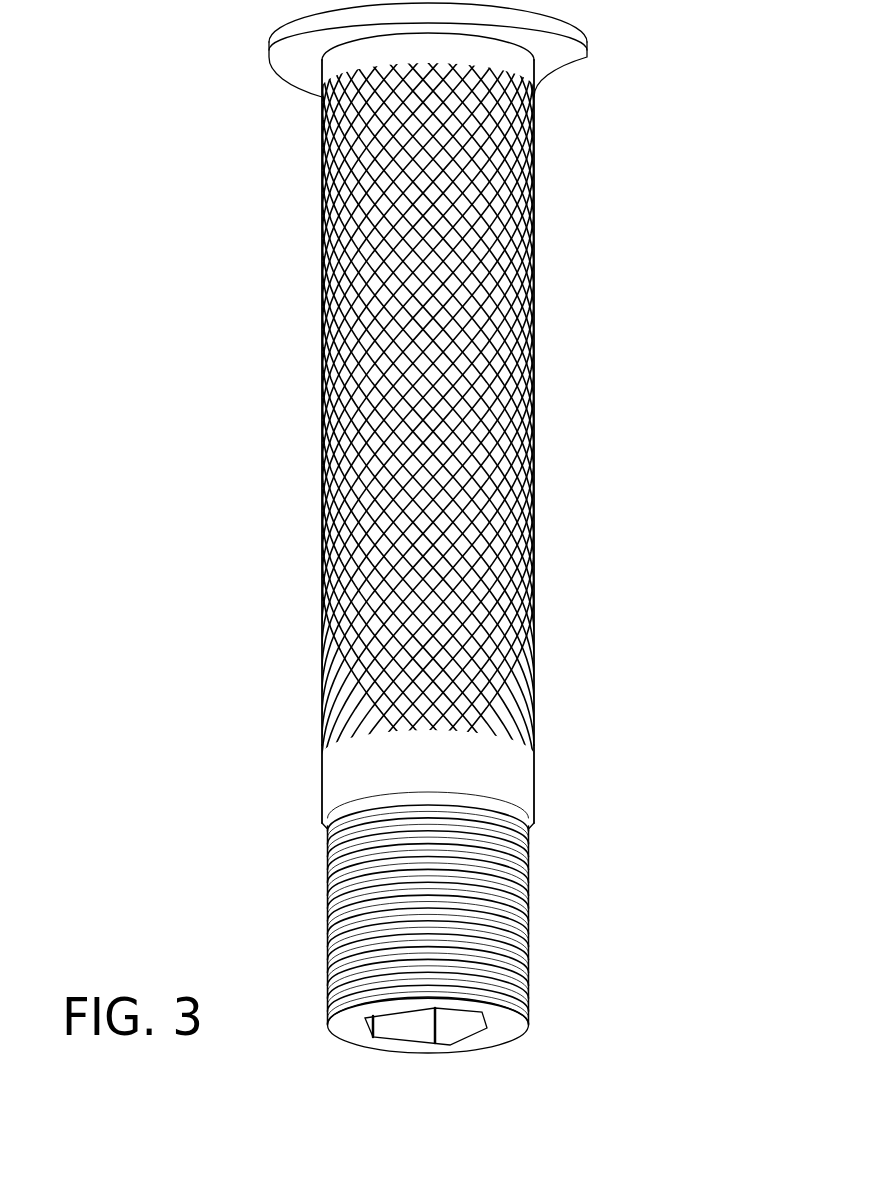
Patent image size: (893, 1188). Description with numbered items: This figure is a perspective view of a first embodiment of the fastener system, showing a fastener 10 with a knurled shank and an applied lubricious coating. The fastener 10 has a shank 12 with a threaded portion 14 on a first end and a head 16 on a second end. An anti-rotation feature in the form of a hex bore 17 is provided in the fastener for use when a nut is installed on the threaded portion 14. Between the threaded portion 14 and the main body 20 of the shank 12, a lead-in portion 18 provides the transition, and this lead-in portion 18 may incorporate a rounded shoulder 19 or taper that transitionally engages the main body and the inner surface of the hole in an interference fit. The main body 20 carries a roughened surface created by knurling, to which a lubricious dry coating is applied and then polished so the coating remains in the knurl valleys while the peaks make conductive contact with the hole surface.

The fastener 10 is at (595, 272).
The shank 12 is at (312, 411).
The threaded portion 14 is at (528, 923).
The head 16 is at (585, 45).
The hex bore 17 is at (422, 1020).
The lead-in portion 18 is at (533, 772).
The rounded shoulder 19 is at (388, 788).
The main body 20 is at (533, 448).